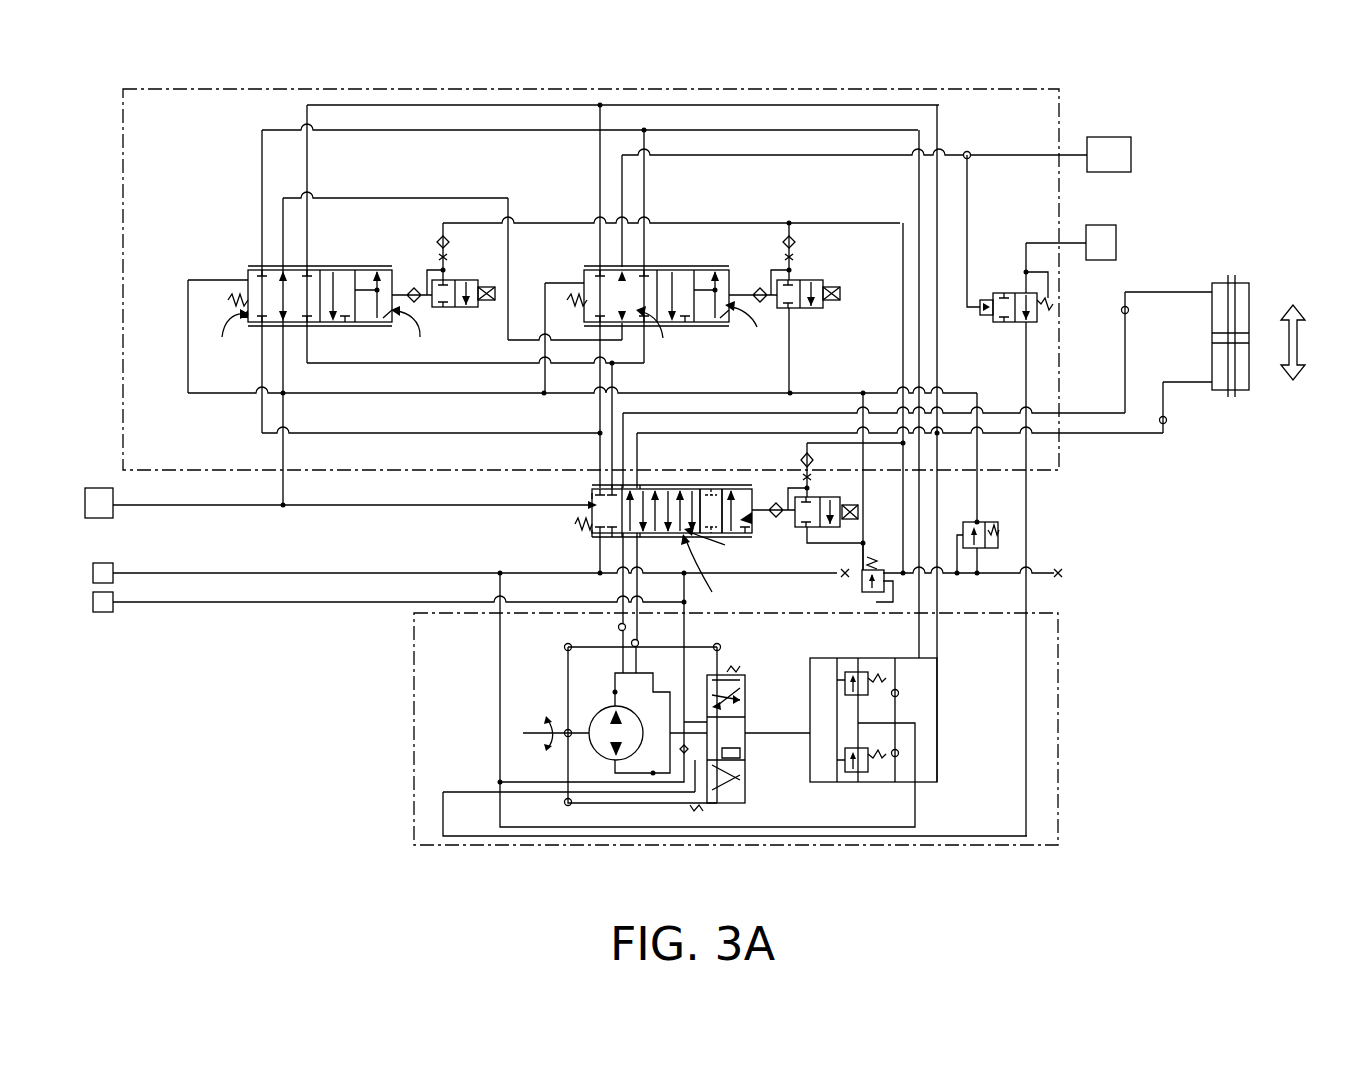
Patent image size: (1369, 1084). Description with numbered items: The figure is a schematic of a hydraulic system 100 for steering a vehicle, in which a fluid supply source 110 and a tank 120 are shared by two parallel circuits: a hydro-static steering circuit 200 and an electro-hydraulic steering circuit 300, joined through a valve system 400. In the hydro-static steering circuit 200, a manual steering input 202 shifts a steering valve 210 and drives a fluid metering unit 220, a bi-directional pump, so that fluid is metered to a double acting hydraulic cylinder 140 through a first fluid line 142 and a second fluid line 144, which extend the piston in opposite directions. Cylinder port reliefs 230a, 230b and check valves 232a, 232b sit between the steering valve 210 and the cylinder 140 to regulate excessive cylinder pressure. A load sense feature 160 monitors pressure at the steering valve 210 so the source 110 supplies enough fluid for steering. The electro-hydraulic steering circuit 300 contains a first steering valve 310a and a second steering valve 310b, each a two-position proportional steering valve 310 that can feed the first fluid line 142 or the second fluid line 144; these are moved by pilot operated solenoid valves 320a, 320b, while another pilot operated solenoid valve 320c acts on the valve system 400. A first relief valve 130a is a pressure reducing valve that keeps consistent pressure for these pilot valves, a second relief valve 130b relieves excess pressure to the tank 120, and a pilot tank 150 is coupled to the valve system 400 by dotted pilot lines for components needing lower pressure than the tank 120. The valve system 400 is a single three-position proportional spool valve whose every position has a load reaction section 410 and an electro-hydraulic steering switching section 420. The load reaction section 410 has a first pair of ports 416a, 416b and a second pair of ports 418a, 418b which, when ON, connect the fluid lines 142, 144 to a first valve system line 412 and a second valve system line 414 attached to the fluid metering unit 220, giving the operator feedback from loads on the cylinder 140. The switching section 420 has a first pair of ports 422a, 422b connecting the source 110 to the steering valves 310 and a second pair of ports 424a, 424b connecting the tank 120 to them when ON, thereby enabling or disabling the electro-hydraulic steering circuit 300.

The hydraulic system 100 is at (1242, 62).
The fluid supply source 110 is at (105, 612).
The tank 120 is at (105, 565).
The first relief valve 130a is at (872, 594).
The second relief valve 130b is at (978, 522).
The hydraulic cylinder 140 is at (1212, 283).
The first fluid line 142 is at (1129, 310).
The second fluid line 144 is at (1167, 420).
The pilot tank 150 is at (90, 488).
The load sense feature 160 is at (1105, 226).
The hydro-static steering circuit 200 is at (1058, 697).
The manual steering input 202 is at (545, 730).
The steering valve 210 is at (762, 674).
The fluid metering unit 220 is at (597, 716).
The cylinder port relief 230a is at (882, 680).
The cylinder port relief 230b is at (858, 782).
The check valve 232a is at (899, 693).
The check valve 232b is at (899, 753).
The electro-hydraulic steering circuit 300 is at (1060, 100).
The steering valve 310 is at (487, 285).
The first steering valve 310a is at (250, 268).
The second steering valve 310b is at (683, 268).
The pilot operated solenoid valve 320a is at (432, 280).
The pilot operated solenoid valve 320b is at (817, 280).
The pilot operated solenoid valve 320c is at (824, 512).
The valve system 400 is at (494, 553).
The load reaction section 410 is at (738, 487).
The first valve system line 412 is at (618, 629).
The second valve system line 414 is at (638, 646).
The first port of first pair of ports 416a is at (620, 487).
The second port of first pair of ports 416b is at (623, 538).
The first port of second pair of ports 418a is at (640, 488).
The second port of second pair of ports 418b is at (645, 536).
The electro-hydraulic steering switching section 420 is at (717, 486).
The first port of first pair of ports 422a is at (612, 487).
The second port of first pair of ports 422b is at (612, 536).
The first port of second pair of ports 424a is at (597, 496).
The second port of second pair of ports 424b is at (600, 535).